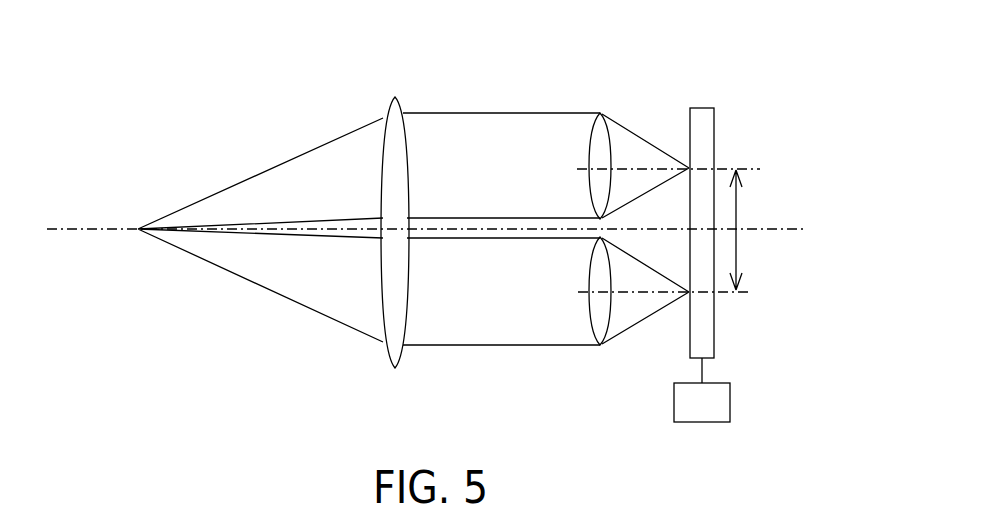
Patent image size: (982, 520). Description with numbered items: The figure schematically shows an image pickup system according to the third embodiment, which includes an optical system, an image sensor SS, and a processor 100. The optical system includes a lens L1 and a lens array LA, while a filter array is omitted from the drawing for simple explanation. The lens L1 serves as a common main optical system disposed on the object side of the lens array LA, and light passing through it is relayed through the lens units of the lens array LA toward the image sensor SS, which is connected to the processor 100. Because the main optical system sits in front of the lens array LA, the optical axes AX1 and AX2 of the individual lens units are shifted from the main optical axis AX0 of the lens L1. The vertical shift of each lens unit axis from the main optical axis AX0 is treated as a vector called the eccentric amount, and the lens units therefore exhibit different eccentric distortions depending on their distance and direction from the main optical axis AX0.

The lens L1 is at (395, 97).
The lens array LA is at (570, 83).
The image sensor SS is at (695, 133).
The main optical axis AX0 is at (92, 227).
The optical axis of lens unit AX1 is at (743, 168).
The optical axis of lens unit AX2 is at (752, 290).
The processor 100 is at (730, 392).